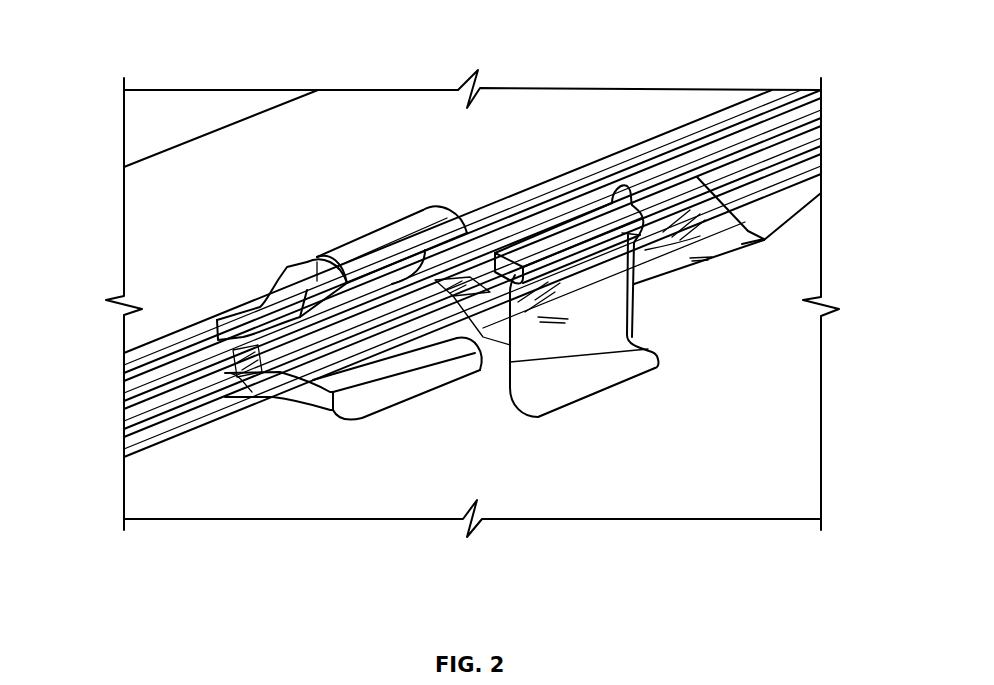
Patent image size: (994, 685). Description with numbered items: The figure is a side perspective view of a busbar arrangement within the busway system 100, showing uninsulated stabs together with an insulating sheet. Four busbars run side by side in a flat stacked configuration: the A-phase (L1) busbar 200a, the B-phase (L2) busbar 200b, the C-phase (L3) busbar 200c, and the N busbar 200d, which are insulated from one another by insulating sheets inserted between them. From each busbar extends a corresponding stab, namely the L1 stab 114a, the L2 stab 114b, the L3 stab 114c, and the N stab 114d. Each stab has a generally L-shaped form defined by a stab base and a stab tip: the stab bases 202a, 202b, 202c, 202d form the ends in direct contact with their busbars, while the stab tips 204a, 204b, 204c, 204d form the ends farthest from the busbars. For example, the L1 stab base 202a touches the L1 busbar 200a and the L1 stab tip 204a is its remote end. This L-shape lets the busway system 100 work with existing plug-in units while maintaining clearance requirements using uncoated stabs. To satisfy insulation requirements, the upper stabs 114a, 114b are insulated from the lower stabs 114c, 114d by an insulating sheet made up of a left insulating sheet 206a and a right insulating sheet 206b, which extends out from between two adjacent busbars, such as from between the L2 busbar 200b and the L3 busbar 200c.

The busway system 100 is at (158, 50).
The A-phase (L1) busbar 200a is at (132, 365).
The B-phase (L2) busbar 200b is at (132, 391).
The C-phase (L3) busbar 200c is at (132, 416).
The N busbar 200d is at (132, 441).
The L1 stab 114a is at (292, 289).
The L2 stab 114b is at (568, 234).
The L3 stab 114c is at (348, 373).
The N stab 114d is at (576, 347).
The L1 stab base 202a is at (200, 330).
The stab base 202b is at (610, 200).
The stab base 202c is at (222, 368).
The stab base 202d is at (645, 250).
The L1 stab tip 204a is at (428, 238).
The stab tip 204b is at (645, 222).
The stab tip 204c is at (420, 385).
The stab tip 204d is at (595, 383).
The left insulating sheet 206a is at (243, 390).
The right insulating sheet 206b is at (767, 243).